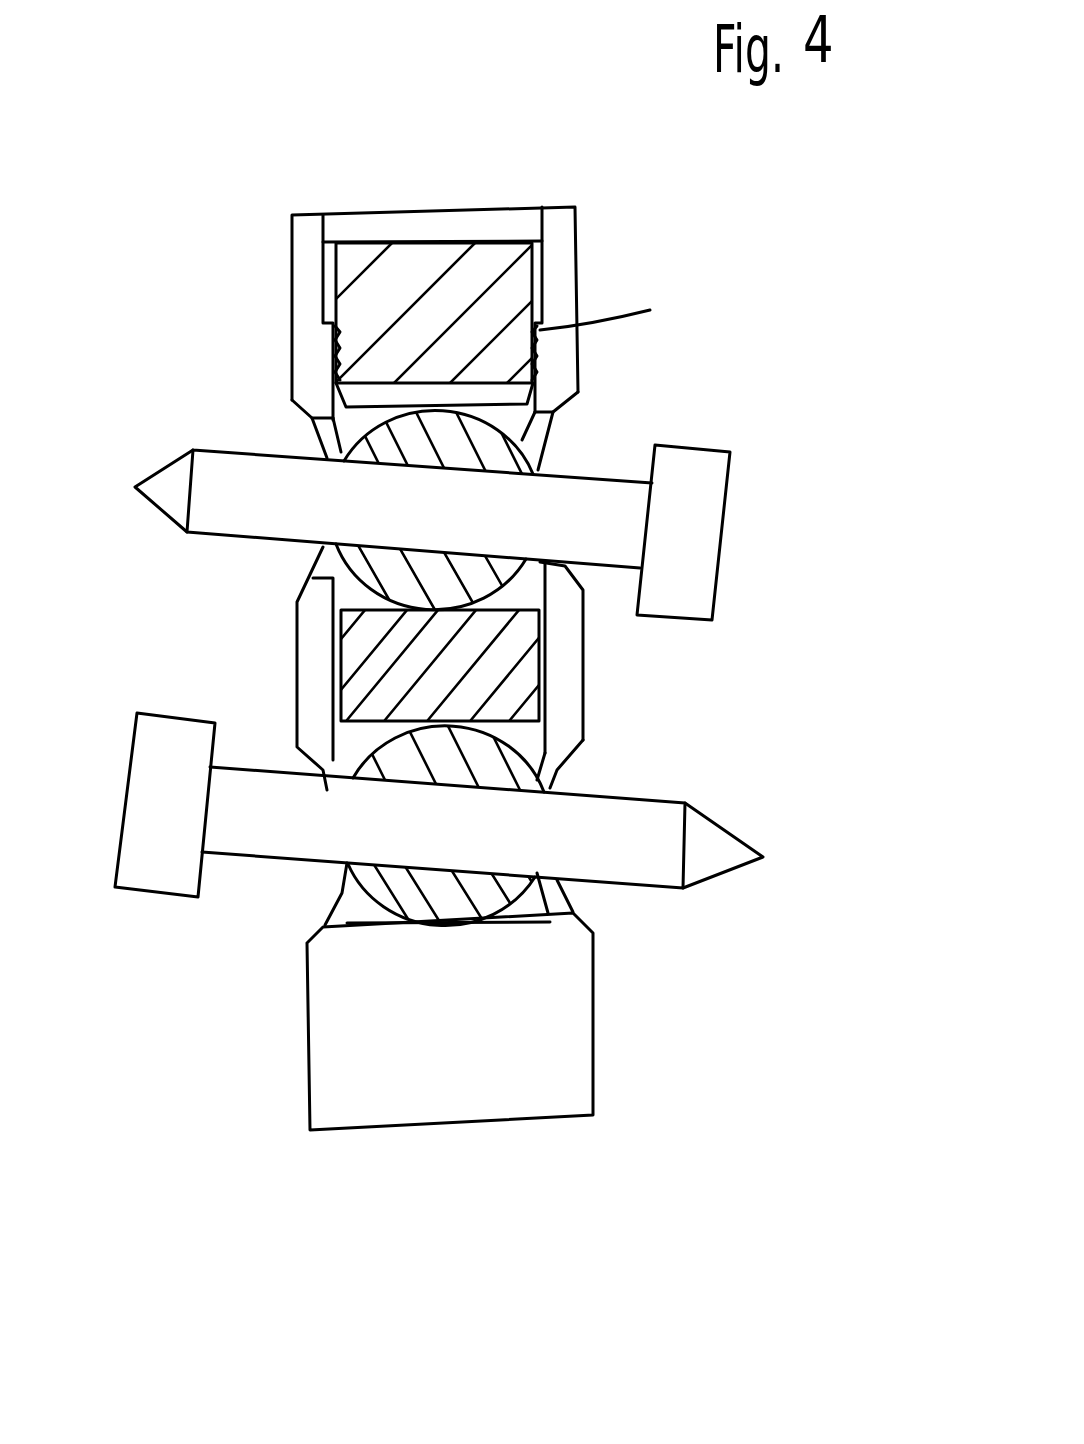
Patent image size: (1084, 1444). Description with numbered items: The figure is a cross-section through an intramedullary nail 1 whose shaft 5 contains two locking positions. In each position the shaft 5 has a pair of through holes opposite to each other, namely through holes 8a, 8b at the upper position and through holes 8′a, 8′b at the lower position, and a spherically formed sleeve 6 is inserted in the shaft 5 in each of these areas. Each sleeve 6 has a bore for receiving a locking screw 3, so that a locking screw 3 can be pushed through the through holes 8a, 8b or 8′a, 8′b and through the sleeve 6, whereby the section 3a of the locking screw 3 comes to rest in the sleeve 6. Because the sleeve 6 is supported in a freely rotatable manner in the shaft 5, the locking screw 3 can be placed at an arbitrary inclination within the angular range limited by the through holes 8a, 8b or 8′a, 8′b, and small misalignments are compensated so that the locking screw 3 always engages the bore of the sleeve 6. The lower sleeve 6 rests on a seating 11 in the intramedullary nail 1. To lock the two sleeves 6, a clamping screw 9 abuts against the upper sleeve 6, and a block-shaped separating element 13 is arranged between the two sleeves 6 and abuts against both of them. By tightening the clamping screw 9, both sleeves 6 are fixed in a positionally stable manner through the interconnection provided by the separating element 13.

The intramedullary nail 1 is at (662, 227).
The locking screw 3 is at (235, 520).
The section of the locking screw 3a is at (428, 500).
The shaft 5 is at (302, 302).
The sleeve 6 is at (475, 582).
The through hole 8a is at (552, 430).
The through hole 8b is at (320, 430).
The through hole 8′a is at (550, 765).
The through hole 8′b is at (340, 893).
The clamping screw 9 is at (395, 275).
The seating 11 is at (380, 930).
The separating element 13 is at (525, 680).